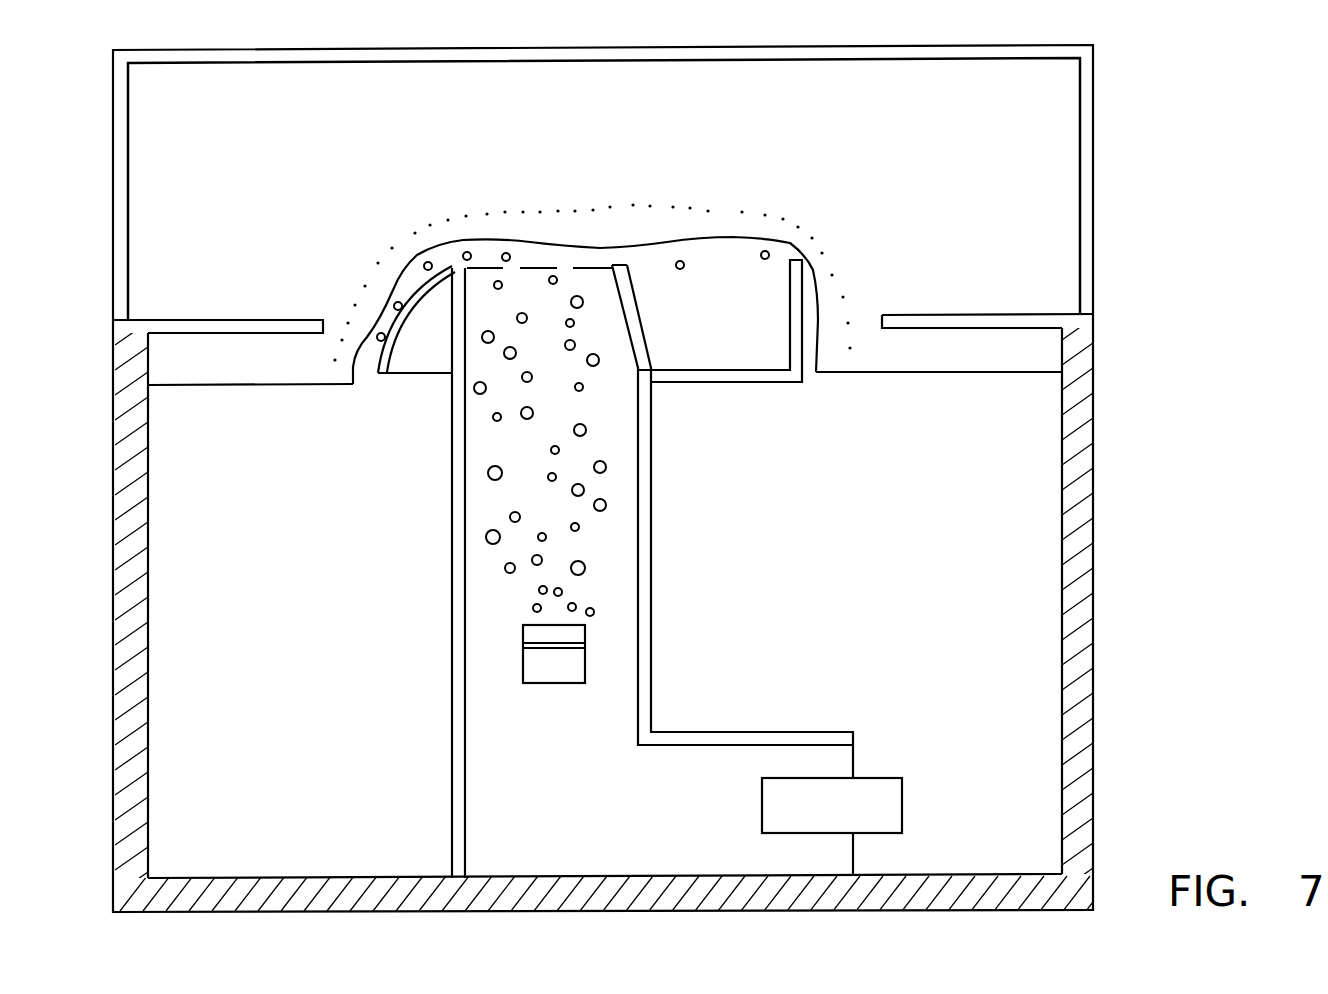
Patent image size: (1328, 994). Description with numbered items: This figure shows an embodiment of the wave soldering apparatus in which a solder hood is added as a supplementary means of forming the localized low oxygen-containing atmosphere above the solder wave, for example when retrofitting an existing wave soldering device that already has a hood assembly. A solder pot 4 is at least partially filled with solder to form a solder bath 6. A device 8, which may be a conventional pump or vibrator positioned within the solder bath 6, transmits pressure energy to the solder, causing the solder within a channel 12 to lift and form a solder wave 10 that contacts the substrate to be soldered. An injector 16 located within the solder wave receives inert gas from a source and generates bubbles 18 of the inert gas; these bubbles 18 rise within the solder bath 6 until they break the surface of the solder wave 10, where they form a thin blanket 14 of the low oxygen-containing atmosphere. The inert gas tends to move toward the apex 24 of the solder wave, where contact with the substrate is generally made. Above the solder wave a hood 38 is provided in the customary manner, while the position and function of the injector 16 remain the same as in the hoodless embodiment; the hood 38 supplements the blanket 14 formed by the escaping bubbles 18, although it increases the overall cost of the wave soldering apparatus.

The solder pot 4 is at (1097, 716).
The solder bath 6 is at (1013, 393).
The device for forming a solder wave 8 is at (918, 763).
The solder wave 10 is at (718, 237).
The channel 12 is at (647, 642).
The blanket of low oxygen-containing atmosphere 14 is at (497, 213).
The injector 16 is at (548, 665).
The bubbles 18 is at (485, 468).
The apex of the solder wave 24 is at (626, 204).
The hood 38 is at (1100, 138).